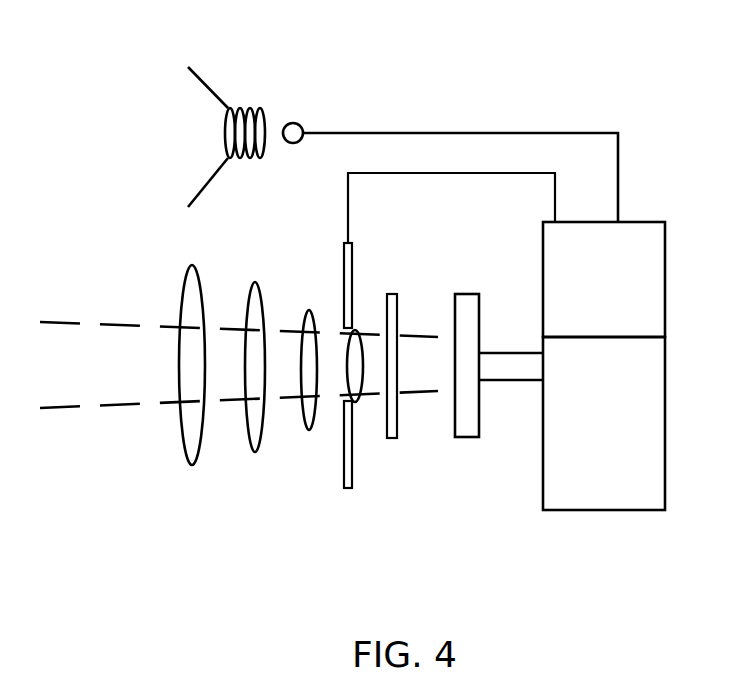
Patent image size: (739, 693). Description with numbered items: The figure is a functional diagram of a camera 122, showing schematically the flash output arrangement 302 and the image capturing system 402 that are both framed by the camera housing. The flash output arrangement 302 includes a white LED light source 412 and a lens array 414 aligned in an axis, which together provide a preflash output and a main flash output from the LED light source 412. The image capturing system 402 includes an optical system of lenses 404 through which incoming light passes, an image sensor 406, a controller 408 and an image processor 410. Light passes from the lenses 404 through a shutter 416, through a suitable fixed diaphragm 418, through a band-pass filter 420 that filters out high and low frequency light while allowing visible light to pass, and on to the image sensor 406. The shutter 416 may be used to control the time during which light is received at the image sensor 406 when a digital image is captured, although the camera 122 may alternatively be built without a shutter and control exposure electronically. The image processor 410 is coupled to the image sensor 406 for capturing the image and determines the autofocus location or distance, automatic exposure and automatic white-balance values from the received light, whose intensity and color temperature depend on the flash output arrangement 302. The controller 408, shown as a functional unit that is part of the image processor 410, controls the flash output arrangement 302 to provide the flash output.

The camera 122 is at (170, 37).
The flash output arrangement 302 is at (330, 205).
The image capturing system 402 is at (682, 551).
The lenses 404 is at (325, 468).
The image sensor 406 is at (470, 428).
The controller 408 is at (590, 307).
The image processor 410 is at (590, 454).
The LED light source 412 is at (300, 120).
The lens array 414 is at (237, 108).
The shutter 416 is at (345, 487).
The fixed diaphragm 418 is at (355, 378).
The band-pass filter 420 is at (392, 435).